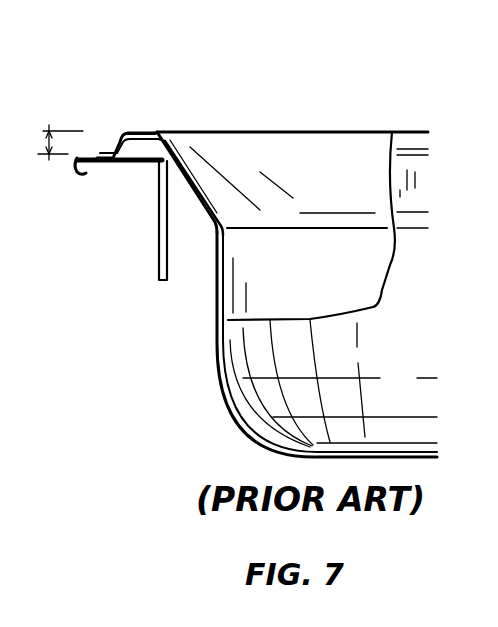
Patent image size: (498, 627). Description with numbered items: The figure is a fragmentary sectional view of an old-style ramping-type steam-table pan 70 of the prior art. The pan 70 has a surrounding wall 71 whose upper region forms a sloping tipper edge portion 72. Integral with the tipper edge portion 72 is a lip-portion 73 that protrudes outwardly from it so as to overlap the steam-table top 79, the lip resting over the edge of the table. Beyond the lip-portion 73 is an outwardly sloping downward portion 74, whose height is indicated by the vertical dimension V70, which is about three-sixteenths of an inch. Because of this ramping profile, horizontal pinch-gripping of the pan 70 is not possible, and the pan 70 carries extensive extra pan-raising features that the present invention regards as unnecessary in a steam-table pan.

The old-style ramping-type steam-table pan 70 is at (340, 117).
The surrounding wall 71 is at (218, 282).
The sloping tipper edge portion 72 is at (177, 150).
The lip-portion 73 is at (133, 137).
The outwardly sloping downward portion 74 is at (112, 147).
The steam-table top 79 is at (103, 165).
The vertical dimension V70 is at (49, 152).